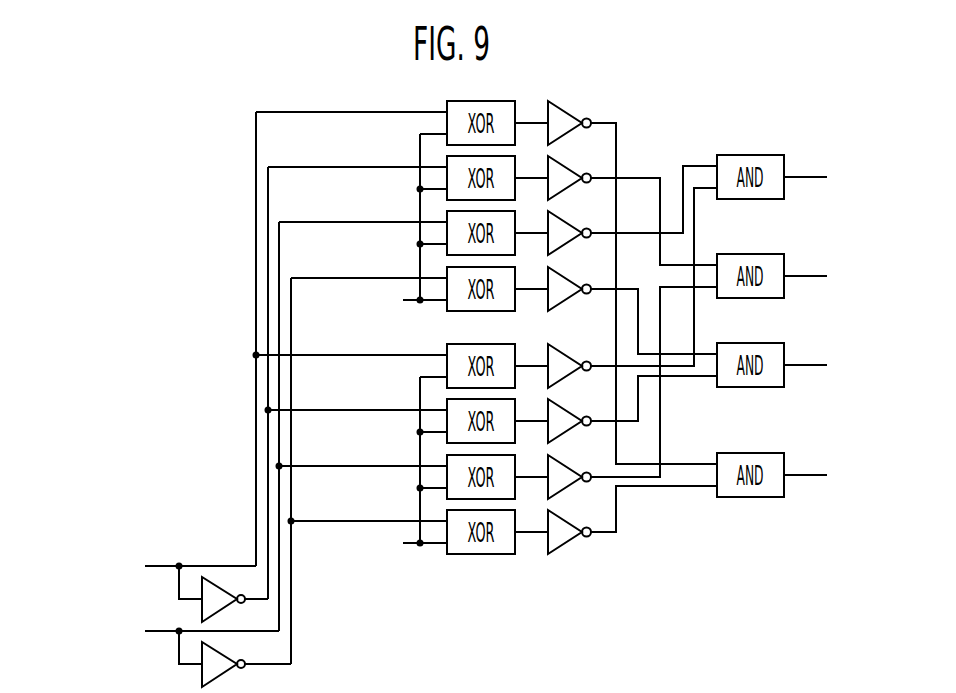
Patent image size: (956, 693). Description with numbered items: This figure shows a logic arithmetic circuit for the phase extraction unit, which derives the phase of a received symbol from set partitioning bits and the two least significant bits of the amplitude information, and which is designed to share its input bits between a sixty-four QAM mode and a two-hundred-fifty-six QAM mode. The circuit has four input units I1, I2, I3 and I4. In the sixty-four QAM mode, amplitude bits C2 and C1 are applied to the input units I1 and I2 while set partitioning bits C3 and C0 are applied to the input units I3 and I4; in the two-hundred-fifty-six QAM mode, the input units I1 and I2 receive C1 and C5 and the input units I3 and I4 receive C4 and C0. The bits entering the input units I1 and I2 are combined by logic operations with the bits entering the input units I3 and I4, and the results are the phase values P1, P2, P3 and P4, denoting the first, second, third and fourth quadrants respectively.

The first input unit I1 is at (147, 567).
The second input unit I2 is at (159, 632).
The third input unit I3 is at (358, 301).
The fourth input unit I4 is at (384, 543).
The first quadrant phase value P1 is at (818, 178).
The second quadrant phase value P2 is at (818, 277).
The third quadrant phase value P3 is at (818, 366).
The fourth quadrant phase value P4 is at (818, 476).